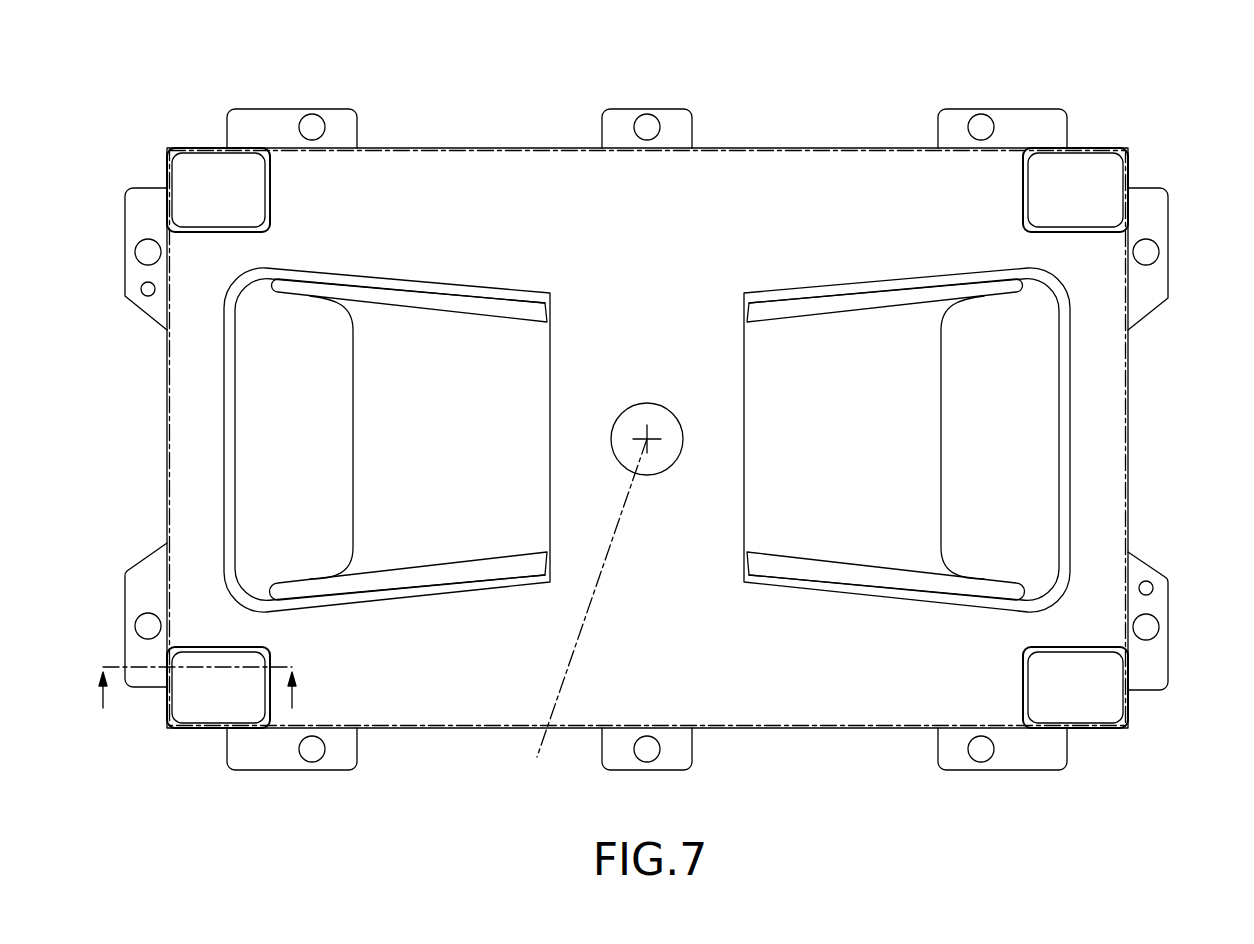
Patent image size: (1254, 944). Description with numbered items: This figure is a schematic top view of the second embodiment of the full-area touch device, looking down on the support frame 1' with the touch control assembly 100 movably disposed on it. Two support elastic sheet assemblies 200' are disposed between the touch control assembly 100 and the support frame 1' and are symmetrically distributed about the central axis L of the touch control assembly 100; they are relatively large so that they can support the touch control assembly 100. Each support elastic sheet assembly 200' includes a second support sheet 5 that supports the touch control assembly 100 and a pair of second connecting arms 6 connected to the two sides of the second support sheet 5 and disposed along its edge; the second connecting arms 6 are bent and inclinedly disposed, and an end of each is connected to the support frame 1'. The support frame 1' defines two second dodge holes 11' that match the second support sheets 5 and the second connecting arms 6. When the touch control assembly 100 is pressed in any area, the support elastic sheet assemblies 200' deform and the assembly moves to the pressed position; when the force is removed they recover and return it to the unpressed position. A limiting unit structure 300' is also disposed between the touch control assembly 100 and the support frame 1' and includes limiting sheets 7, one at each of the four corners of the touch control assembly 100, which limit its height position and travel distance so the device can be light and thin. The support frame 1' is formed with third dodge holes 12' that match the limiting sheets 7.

The touch control assembly 100 is at (785, 148).
The support frame 1' is at (664, 439).
The support elastic sheet assembly 200' is at (996, 447).
The second dodge hole 11' is at (907, 352).
The second connecting arm 6 is at (910, 295).
The second support sheet 5 is at (1033, 365).
The third dodge hole 12' is at (1127, 634).
The limiting unit structure 300' is at (1127, 678).
The limiting sheet 7 is at (1127, 678).